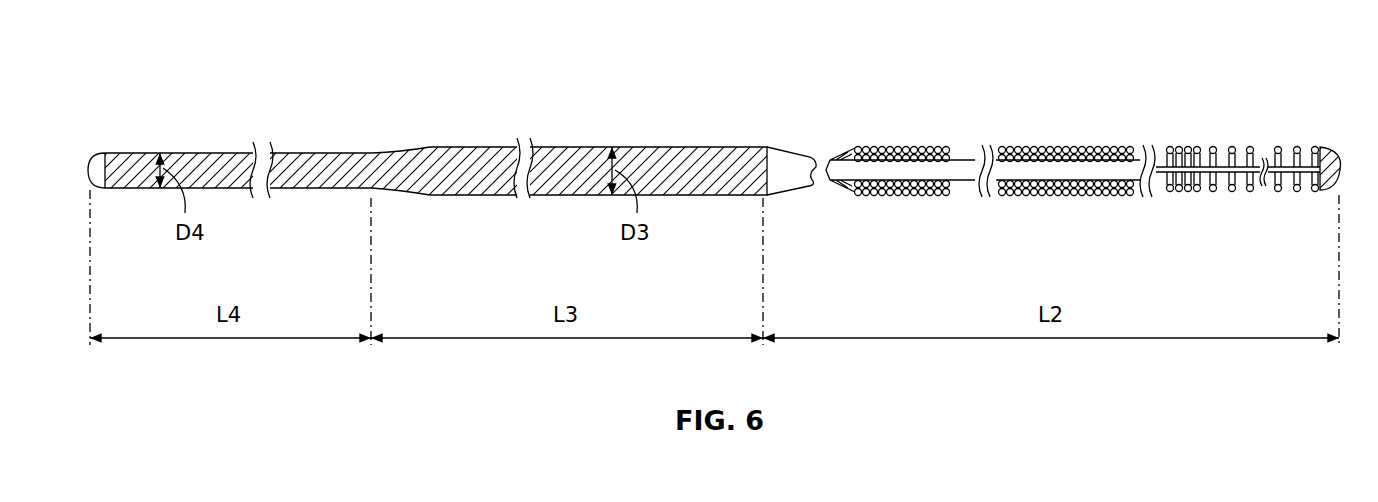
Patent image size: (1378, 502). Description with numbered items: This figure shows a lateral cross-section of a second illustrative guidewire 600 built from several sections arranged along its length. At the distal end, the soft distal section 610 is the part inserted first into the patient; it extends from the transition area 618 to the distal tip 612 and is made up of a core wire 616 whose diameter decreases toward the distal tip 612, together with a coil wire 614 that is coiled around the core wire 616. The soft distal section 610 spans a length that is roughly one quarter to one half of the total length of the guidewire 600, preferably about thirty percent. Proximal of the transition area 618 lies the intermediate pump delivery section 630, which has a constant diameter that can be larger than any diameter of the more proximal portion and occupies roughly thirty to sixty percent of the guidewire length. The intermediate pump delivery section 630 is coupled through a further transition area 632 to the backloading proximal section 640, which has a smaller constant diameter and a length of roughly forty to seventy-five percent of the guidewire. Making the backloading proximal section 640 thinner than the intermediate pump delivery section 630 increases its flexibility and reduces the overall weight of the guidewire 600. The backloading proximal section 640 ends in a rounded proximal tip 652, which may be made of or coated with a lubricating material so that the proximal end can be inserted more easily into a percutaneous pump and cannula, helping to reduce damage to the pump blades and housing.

The guidewire 600 is at (194, 46).
The proximal tip 652 is at (99, 170).
The backloading proximal section 640 is at (212, 163).
The transition area 632 is at (398, 180).
The intermediate pump delivery section 630 is at (588, 165).
The transition area 618 is at (782, 177).
The core wire 616 is at (960, 170).
The soft distal section 610 is at (1082, 152).
The coil wire 614 is at (1213, 192).
The distal tip 612 is at (1340, 168).